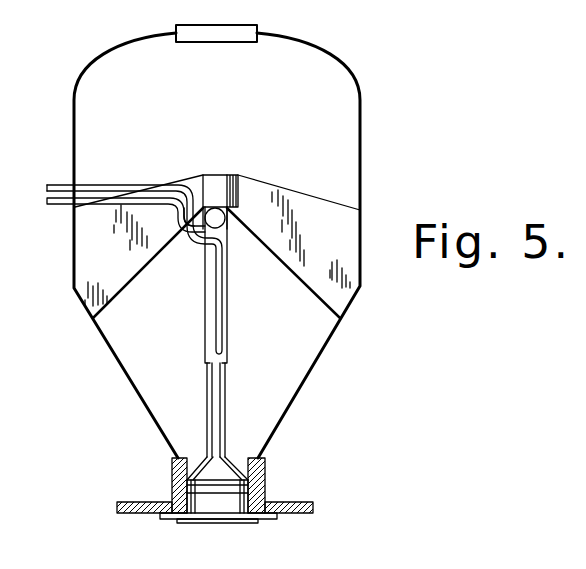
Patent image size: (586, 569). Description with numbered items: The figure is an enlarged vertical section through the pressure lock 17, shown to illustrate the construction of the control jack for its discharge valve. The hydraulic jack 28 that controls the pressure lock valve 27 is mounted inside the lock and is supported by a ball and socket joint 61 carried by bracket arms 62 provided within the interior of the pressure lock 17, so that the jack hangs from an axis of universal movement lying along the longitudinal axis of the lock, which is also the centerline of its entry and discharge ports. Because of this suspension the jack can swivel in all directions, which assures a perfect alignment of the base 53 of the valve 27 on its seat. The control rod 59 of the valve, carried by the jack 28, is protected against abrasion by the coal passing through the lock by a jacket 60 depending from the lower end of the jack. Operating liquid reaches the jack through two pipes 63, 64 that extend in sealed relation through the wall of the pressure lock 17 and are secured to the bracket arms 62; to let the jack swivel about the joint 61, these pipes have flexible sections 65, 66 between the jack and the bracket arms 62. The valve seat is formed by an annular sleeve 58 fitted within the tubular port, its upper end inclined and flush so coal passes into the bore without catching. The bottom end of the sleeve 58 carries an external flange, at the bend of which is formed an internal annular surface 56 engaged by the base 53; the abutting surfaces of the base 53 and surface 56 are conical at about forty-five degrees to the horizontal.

The pressure lock 17 is at (337, 123).
The pressure lock valve 27 is at (197, 492).
The jack 28 is at (208, 316).
The base 53 is at (262, 517).
The internal annular surface 56 is at (189, 517).
The annular sleeve 58 is at (254, 488).
The control rod 59 is at (218, 407).
The jacket 60 is at (228, 395).
The ball and socket joint 61 is at (221, 221).
The bracket arms 62 is at (93, 253).
The pipe 63 is at (62, 184).
The pipe 64 is at (57, 200).
The flexible section 65 is at (209, 194).
The flexible section 66 is at (180, 218).